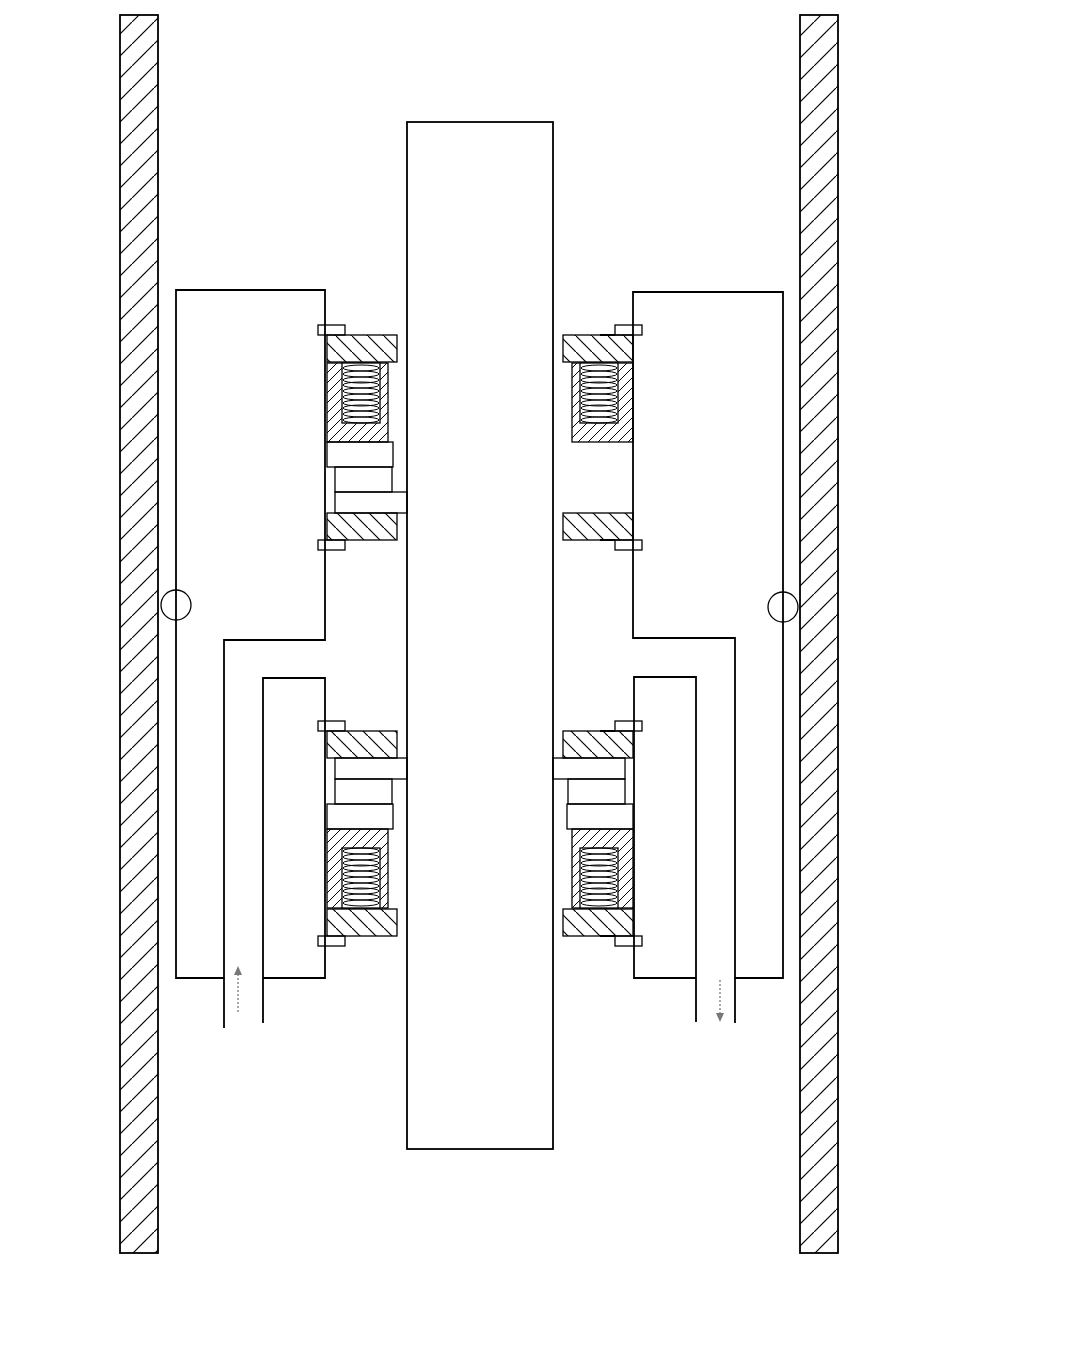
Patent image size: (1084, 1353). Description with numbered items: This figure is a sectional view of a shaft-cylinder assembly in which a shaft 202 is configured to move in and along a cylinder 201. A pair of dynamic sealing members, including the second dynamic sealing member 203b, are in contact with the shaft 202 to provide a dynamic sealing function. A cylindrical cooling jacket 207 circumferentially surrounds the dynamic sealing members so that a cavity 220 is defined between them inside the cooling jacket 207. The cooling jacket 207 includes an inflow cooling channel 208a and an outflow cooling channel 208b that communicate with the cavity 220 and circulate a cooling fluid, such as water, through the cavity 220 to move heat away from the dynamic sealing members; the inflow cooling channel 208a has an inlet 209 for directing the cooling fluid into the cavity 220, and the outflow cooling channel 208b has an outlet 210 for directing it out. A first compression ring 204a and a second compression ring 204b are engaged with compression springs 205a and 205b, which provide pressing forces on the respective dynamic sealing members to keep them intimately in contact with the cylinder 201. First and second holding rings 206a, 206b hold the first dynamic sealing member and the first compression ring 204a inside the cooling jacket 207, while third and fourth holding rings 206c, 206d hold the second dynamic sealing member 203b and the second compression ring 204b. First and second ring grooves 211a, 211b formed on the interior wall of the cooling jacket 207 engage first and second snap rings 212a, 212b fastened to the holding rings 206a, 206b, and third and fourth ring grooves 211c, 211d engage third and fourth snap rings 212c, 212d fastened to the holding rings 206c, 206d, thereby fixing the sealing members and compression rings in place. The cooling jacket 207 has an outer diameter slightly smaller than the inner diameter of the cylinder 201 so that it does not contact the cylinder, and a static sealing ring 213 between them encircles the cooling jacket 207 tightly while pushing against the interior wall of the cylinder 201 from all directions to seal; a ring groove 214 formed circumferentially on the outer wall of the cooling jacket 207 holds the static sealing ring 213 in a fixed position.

The cylinder 201 is at (872, 634).
The shaft 202 is at (537, 635).
The second dynamic sealing member 203b is at (544, 783).
The first compression ring 204a is at (547, 402).
The second compression ring 204b is at (544, 842).
The compression spring 205a is at (547, 818).
The compression spring 205b is at (537, 874).
The first holding ring 206a is at (550, 331).
The second holding ring 206b is at (548, 540).
The third holding ring 206c is at (550, 725).
The fourth holding ring 206d is at (554, 935).
The cylindrical cooling jacket 207 is at (552, 659).
The inflow cooling channel 208a is at (186, 828).
The outflow cooling channel 208b is at (792, 849).
The inlet 209 is at (275, 1038).
The outlet 210 is at (684, 1044).
The first ring groove 211a is at (602, 285).
The second ring groove 211b is at (602, 580).
The third ring groove 211c is at (602, 680).
The fourth ring groove 211d is at (603, 989).
The first snap ring 212a is at (554, 297).
The second snap ring 212b is at (539, 575).
The third snap ring 212c is at (554, 691).
The fourth snap ring 212d is at (545, 969).
The static sealing ring 213 is at (856, 587).
The ring groove 214 is at (555, 549).
The cavity 220 is at (305, 636).